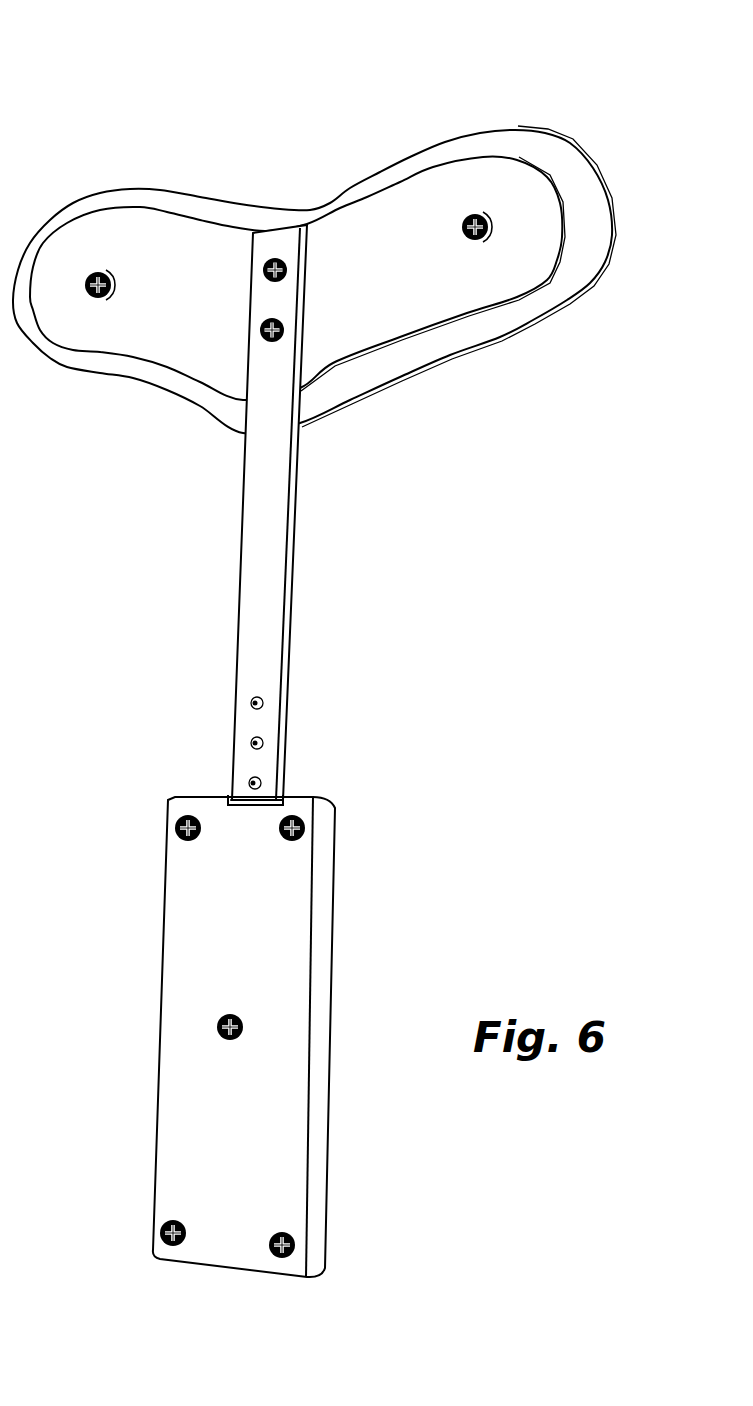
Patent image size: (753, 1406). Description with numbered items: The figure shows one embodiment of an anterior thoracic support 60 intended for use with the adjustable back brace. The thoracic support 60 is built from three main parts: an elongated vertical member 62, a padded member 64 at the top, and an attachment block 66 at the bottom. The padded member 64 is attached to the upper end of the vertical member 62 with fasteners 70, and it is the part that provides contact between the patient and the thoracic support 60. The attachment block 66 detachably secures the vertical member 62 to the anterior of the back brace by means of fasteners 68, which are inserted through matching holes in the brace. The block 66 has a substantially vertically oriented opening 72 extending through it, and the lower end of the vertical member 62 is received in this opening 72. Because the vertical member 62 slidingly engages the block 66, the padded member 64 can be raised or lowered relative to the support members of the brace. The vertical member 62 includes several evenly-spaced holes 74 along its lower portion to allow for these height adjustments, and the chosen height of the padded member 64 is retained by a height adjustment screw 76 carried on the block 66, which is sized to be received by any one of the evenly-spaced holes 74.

The anterior thoracic support 60 is at (567, 93).
The elongated vertical member 62 is at (272, 605).
The padded member 64 is at (533, 210).
The attachment block 66 is at (323, 875).
The fasteners 68 is at (178, 836).
The fasteners 70 is at (262, 338).
The vertically oriented opening 72 is at (226, 795).
The evenly-spaced holes 74 is at (250, 703).
The height adjustment screw 76 is at (245, 1027).